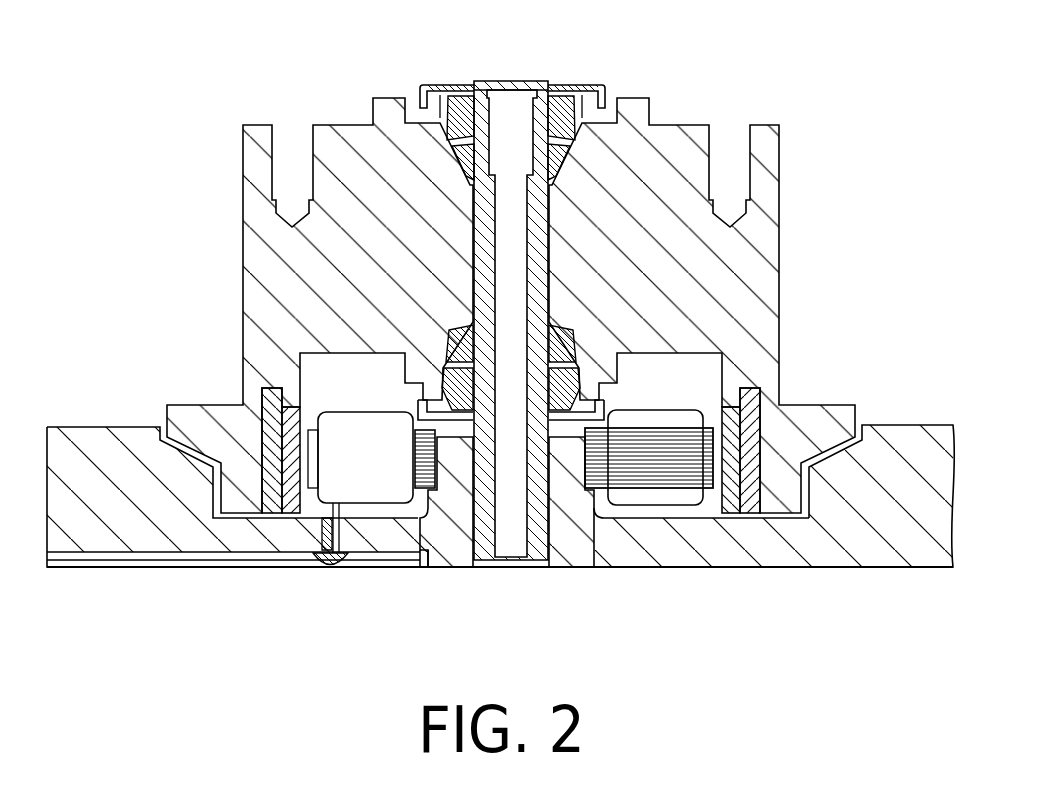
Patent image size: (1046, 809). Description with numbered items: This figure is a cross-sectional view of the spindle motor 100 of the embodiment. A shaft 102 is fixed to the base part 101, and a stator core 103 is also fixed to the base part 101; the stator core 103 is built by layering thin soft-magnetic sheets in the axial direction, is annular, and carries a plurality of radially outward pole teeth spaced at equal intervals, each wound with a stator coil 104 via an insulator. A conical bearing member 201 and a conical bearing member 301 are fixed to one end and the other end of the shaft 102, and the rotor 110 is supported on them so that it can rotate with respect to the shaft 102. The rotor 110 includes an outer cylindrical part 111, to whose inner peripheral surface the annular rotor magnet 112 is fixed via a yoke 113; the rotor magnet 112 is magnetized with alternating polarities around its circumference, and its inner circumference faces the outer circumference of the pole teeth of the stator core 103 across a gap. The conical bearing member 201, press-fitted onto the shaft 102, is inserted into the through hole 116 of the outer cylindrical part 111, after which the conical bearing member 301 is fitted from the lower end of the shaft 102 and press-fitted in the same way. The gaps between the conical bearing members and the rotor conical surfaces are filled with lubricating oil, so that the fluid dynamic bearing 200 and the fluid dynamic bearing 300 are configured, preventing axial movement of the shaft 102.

The spindle motor 100 is at (822, 80).
The rotor 110 is at (809, 206).
The outer cylindrical part 111 is at (690, 122).
The through hole 116 is at (478, 242).
The rotor magnet 112 is at (745, 492).
The base part 101 is at (878, 553).
The shaft 102 is at (548, 515).
The stator core 103 is at (655, 470).
The stator coil 104 is at (677, 410).
The yoke 113 is at (748, 475).
The fluid dynamic bearing 200 is at (576, 103).
The conical bearing member 201 is at (463, 92).
The fluid dynamic bearing 300 is at (563, 397).
The conical bearing member 301 is at (453, 412).